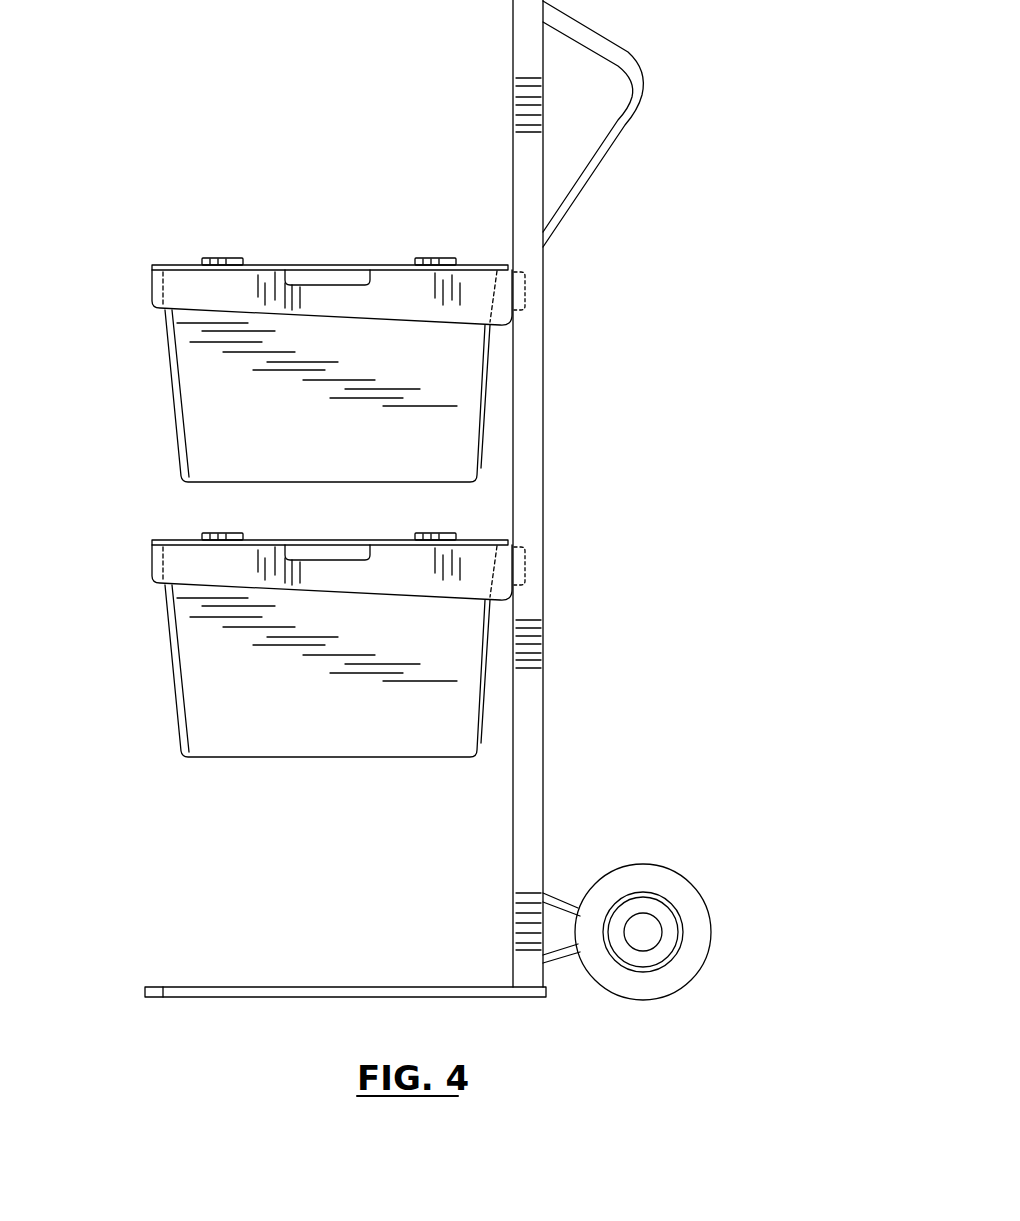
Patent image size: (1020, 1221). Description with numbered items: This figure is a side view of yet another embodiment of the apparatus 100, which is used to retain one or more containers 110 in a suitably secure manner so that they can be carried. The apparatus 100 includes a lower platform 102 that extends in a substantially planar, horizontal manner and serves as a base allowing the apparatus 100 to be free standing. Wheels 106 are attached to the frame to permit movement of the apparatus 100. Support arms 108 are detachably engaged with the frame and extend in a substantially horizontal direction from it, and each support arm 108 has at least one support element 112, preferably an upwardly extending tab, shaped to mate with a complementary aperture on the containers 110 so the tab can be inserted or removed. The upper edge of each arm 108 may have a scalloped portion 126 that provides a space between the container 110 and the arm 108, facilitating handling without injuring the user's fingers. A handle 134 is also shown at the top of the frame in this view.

The apparatus 100 is at (147, 125).
The lower platform 102 is at (285, 998).
The wheels 106 is at (688, 873).
The support arms 108 is at (485, 293).
The containers 110 is at (420, 425).
The support element 112 is at (420, 258).
The scalloped portion 126 is at (343, 279).
The handle 134 is at (623, 125).